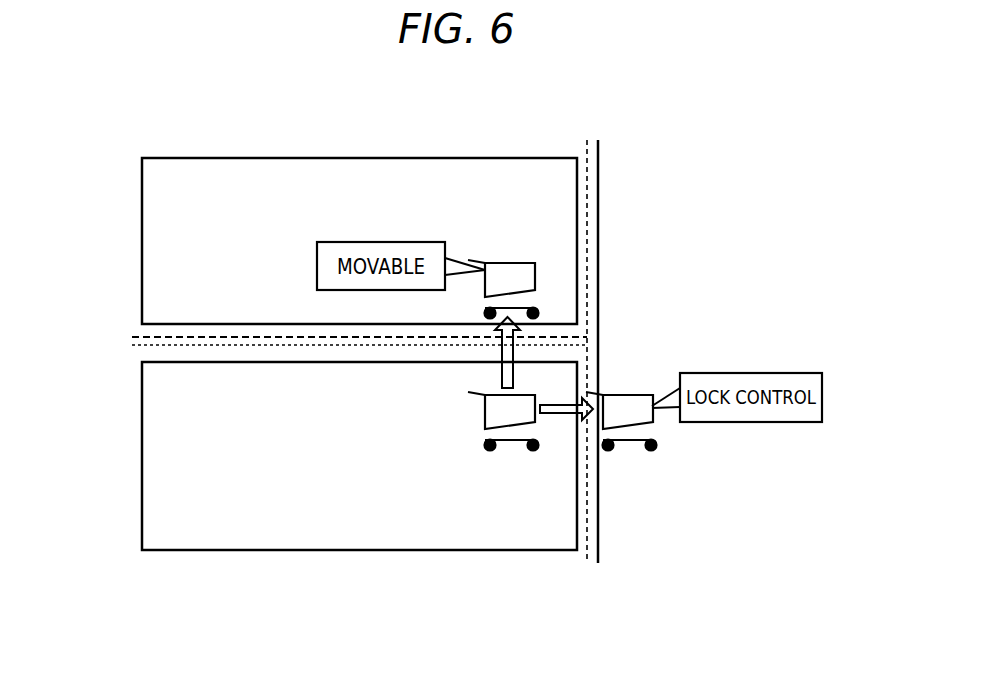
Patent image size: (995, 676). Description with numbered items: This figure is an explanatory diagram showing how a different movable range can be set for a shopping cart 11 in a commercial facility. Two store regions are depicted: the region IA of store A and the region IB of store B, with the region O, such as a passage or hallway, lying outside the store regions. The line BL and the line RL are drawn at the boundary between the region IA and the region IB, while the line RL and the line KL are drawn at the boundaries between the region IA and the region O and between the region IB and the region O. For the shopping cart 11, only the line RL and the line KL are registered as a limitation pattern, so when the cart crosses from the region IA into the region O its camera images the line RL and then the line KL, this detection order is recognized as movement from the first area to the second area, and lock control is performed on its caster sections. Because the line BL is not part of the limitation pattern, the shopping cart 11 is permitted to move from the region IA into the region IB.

The region of store B IB is at (183, 232).
The region of store A IA is at (184, 478).
The region outside the store regions O is at (836, 232).
The line BL is at (140, 336).
The line RL is at (140, 346).
The line KL is at (598, 538).
The shopping cart 11 is at (512, 262).